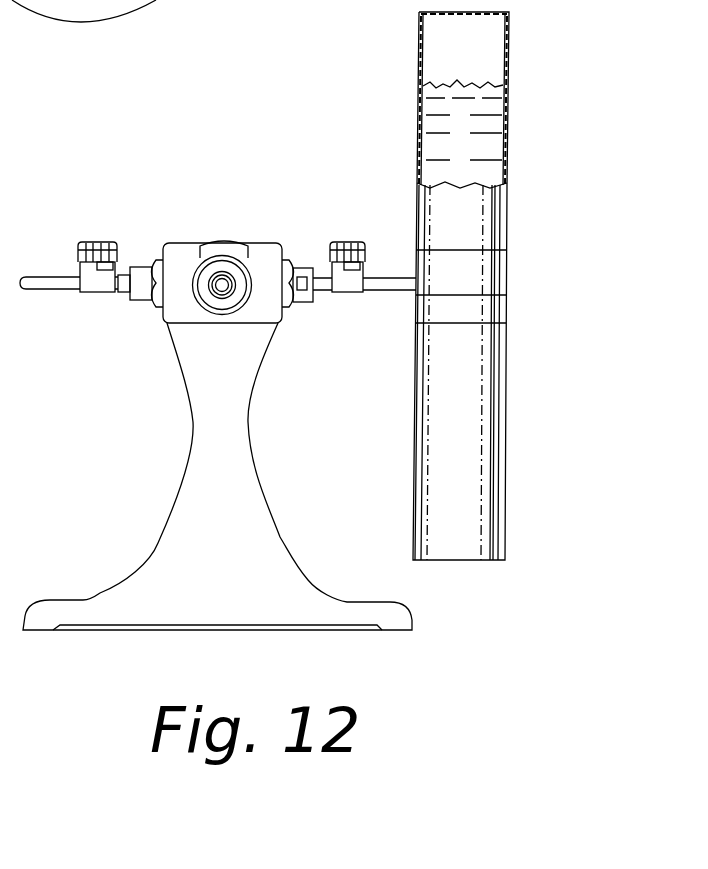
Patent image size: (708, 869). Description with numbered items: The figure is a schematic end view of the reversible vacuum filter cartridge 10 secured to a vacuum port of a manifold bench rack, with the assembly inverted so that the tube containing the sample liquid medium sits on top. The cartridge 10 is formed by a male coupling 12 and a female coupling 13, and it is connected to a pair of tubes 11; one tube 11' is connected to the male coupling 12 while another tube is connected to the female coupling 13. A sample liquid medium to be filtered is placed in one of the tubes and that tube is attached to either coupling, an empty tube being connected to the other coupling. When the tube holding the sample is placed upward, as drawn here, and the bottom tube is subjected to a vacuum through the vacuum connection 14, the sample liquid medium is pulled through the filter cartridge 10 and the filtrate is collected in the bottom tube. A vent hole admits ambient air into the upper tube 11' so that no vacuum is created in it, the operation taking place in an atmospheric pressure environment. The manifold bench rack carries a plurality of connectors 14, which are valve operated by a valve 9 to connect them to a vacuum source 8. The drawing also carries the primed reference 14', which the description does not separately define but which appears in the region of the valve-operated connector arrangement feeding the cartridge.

The vacuum source 8 is at (232, 250).
The valve 9 is at (98, 243).
The reversible vacuum filter cartridge 10 is at (475, 280).
The tubes 11 is at (501, 94).
The tube 11' is at (509, 372).
The male coupling 12 is at (467, 305).
The female coupling 13 is at (450, 270).
The vacuum connection 14 is at (419, 107).
The shaft 14' is at (218, 329).